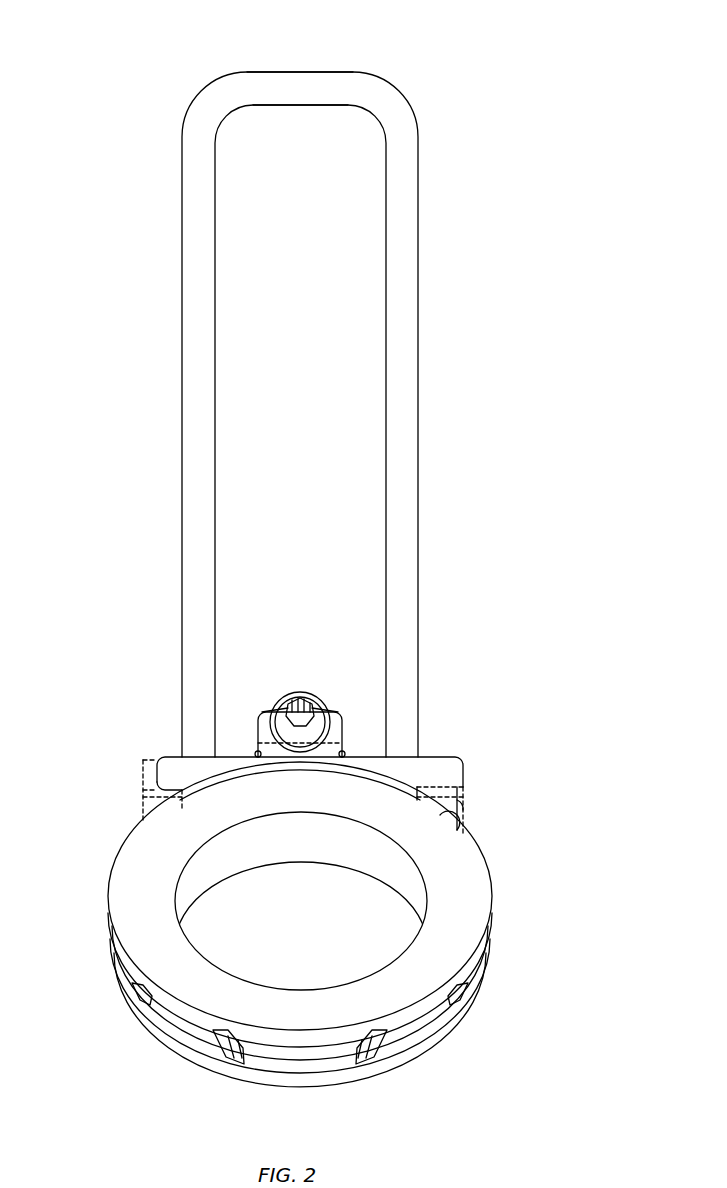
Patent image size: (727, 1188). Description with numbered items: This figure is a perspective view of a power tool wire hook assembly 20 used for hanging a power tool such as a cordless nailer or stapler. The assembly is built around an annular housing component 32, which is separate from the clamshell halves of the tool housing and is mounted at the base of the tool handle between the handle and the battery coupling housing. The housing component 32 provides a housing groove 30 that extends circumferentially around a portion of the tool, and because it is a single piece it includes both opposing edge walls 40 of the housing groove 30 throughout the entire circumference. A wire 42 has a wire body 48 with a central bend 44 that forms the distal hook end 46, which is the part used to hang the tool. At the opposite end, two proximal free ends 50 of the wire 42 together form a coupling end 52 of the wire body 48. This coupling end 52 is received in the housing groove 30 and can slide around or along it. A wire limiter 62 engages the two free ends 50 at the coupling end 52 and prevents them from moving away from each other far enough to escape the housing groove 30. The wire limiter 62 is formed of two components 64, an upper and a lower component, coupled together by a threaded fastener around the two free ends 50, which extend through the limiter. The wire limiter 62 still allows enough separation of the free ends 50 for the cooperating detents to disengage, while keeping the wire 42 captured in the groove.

The power tool wire hook assembly 20 is at (497, 42).
The housing groove 30 is at (318, 1060).
The housing component 32 is at (495, 889).
The opposing edge walls 40 is at (240, 1048).
The wire 42 is at (410, 390).
The central bend 44 is at (283, 86).
The distal hook end 46 is at (161, 277).
The wire body 48 is at (322, 68).
The proximal free ends 50 is at (118, 958).
The coupling end 52 is at (160, 748).
The wire limiter 62 is at (447, 752).
The components 64 is at (466, 785).